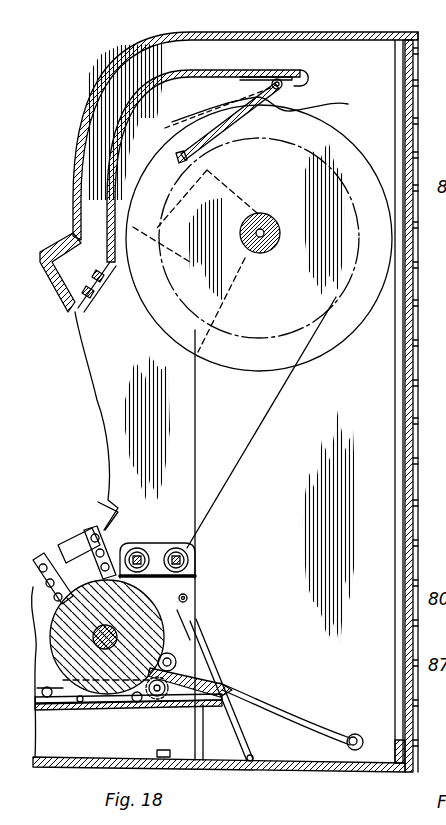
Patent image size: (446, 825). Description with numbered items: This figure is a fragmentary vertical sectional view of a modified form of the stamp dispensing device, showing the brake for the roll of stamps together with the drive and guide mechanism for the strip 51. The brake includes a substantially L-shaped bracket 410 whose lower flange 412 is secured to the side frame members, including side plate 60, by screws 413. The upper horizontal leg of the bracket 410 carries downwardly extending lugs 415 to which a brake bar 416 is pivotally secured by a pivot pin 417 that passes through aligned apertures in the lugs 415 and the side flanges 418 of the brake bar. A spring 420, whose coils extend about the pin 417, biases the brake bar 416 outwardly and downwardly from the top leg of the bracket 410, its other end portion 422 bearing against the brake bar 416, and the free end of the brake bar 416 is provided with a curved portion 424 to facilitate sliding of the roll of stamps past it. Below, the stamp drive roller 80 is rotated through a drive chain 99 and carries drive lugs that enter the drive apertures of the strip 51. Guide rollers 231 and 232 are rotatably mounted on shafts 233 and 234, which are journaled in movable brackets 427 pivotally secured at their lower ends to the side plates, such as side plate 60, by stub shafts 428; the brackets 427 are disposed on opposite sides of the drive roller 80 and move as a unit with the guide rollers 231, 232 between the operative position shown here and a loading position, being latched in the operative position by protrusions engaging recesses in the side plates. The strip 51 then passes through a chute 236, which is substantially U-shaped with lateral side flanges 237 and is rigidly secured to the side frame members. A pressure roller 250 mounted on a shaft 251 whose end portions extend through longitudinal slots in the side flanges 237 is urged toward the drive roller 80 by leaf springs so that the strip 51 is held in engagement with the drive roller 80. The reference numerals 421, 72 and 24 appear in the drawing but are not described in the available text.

The L-shaped bracket 410 is at (157, 72).
The inner guide wall 421 is at (213, 70).
The spring 420 is at (279, 73).
The side flanges 418 is at (273, 77).
The pivot pin 417 is at (290, 86).
The downwardly extending lugs 415 is at (258, 85).
The end portion of the spring 422 is at (200, 118).
The brake bar 416 is at (300, 110).
The screws 413 is at (100, 262).
The lower flange 412 is at (97, 278).
The drum 72 is at (270, 220).
The curved portion 424 is at (195, 261).
The strip 51 is at (283, 403).
The side plate 60 is at (197, 448).
The drive chain 99 is at (90, 530).
The guide roller 232 is at (140, 542).
The guide roller 231 is at (180, 542).
The shaft 233 is at (196, 556).
The shaft 234 is at (172, 591).
The movable brackets 427 is at (177, 610).
The stamp drive roller 80 is at (34, 604).
The stub shafts 428 is at (172, 655).
The shaft 251 is at (187, 670).
The side flanges 237 is at (230, 688).
The pressure roller 250 is at (167, 712).
The chute 236 is at (107, 708).
The bottom wall 24 is at (305, 772).